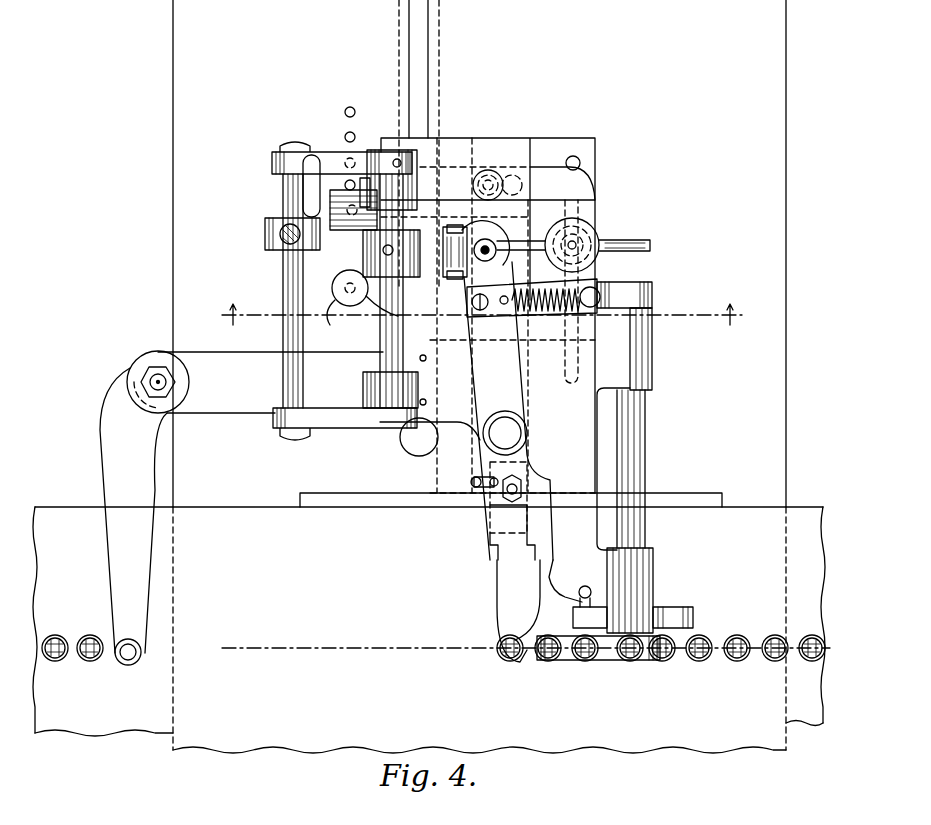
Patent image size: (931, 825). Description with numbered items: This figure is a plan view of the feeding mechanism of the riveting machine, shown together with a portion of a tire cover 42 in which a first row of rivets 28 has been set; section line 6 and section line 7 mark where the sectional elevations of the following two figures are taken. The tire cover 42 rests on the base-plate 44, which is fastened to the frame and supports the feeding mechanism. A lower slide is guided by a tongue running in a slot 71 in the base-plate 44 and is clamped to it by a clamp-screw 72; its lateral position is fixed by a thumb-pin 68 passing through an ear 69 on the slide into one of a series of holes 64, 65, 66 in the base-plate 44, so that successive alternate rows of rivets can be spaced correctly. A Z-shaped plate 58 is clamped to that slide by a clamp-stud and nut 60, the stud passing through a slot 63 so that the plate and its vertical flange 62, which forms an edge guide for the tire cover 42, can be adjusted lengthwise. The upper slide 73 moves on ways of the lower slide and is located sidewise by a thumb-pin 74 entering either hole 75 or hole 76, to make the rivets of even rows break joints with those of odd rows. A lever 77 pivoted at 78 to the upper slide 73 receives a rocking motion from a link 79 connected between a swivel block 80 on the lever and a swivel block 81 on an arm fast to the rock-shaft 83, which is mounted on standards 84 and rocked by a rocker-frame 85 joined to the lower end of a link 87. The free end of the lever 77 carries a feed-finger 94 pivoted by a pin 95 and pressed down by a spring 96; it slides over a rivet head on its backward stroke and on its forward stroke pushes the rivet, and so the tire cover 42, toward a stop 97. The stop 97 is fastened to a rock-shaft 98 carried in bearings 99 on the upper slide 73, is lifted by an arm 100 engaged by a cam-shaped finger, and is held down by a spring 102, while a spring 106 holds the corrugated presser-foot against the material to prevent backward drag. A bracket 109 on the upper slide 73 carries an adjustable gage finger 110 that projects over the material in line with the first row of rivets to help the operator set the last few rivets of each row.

The section line 6— 6 is at (824, 628).
The section line 7— 7 is at (475, 317).
The rivet 28 is at (777, 633).
The tire cover 42 is at (763, 515).
The base-plate 44 is at (787, 153).
The Z-shaped plate 58 is at (515, 301).
The nut 60 is at (602, 243).
The vertical flange 62 is at (376, 497).
The slot 63 is at (585, 163).
The hole 64 is at (345, 297).
The hole 65 is at (340, 275).
The hole 66 is at (335, 252).
The thumb-pin 68 is at (352, 306).
The ear 69 is at (327, 306).
The slot 71 is at (426, 58).
The clamp-screw 72 is at (323, 200).
The upper slide 73 is at (533, 170).
The thumb-pin 74 is at (494, 180).
The hole 75 is at (488, 176).
The hole 76 is at (516, 179).
The lever 77 is at (493, 458).
The pivot 78 is at (510, 433).
The link 79 is at (496, 411).
The swivel block 80 is at (470, 233).
The swivel block 81 is at (397, 200).
The rock-shaft 83 is at (383, 356).
The standards 84 is at (413, 184).
The rocker-frame 85 is at (362, 165).
The link 87 is at (282, 226).
The feed-finger 94 is at (510, 575).
The pin 95 is at (490, 527).
The spring 96 is at (488, 485).
The stop 97 is at (586, 660).
The rock-shaft 98 is at (622, 423).
The bearings 99 is at (654, 358).
The arm 100 is at (654, 294).
The spring 102 is at (546, 318).
The spring 106 is at (573, 618).
The bracket 109 is at (232, 400).
The gage finger 110 is at (115, 560).